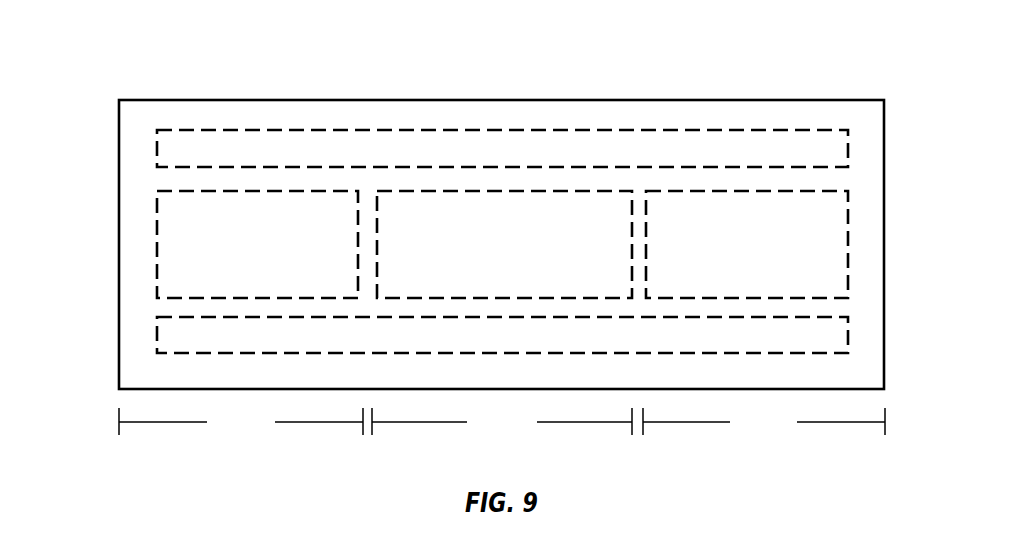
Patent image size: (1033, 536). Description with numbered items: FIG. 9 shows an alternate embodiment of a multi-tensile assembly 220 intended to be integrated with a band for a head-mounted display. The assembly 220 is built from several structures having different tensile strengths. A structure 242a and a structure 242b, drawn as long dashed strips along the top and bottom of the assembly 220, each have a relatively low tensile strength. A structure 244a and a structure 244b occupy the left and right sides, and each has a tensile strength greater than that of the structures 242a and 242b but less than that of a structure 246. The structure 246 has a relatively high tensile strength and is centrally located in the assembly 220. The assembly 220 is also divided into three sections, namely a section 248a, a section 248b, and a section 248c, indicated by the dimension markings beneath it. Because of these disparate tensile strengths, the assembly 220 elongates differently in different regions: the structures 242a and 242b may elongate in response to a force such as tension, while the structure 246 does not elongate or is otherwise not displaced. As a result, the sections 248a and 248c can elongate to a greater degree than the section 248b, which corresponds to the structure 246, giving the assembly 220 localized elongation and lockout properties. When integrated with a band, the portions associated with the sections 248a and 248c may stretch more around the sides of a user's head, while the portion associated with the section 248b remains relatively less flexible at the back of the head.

The assembly 220 is at (143, 99).
The structure 242a is at (723, 130).
The structure 242b is at (157, 337).
The structure 244a is at (157, 238).
The structure 244b is at (848, 229).
The structure 246 is at (502, 192).
The section 248a is at (241, 421).
The section 248b is at (502, 421).
The section 248c is at (764, 421).